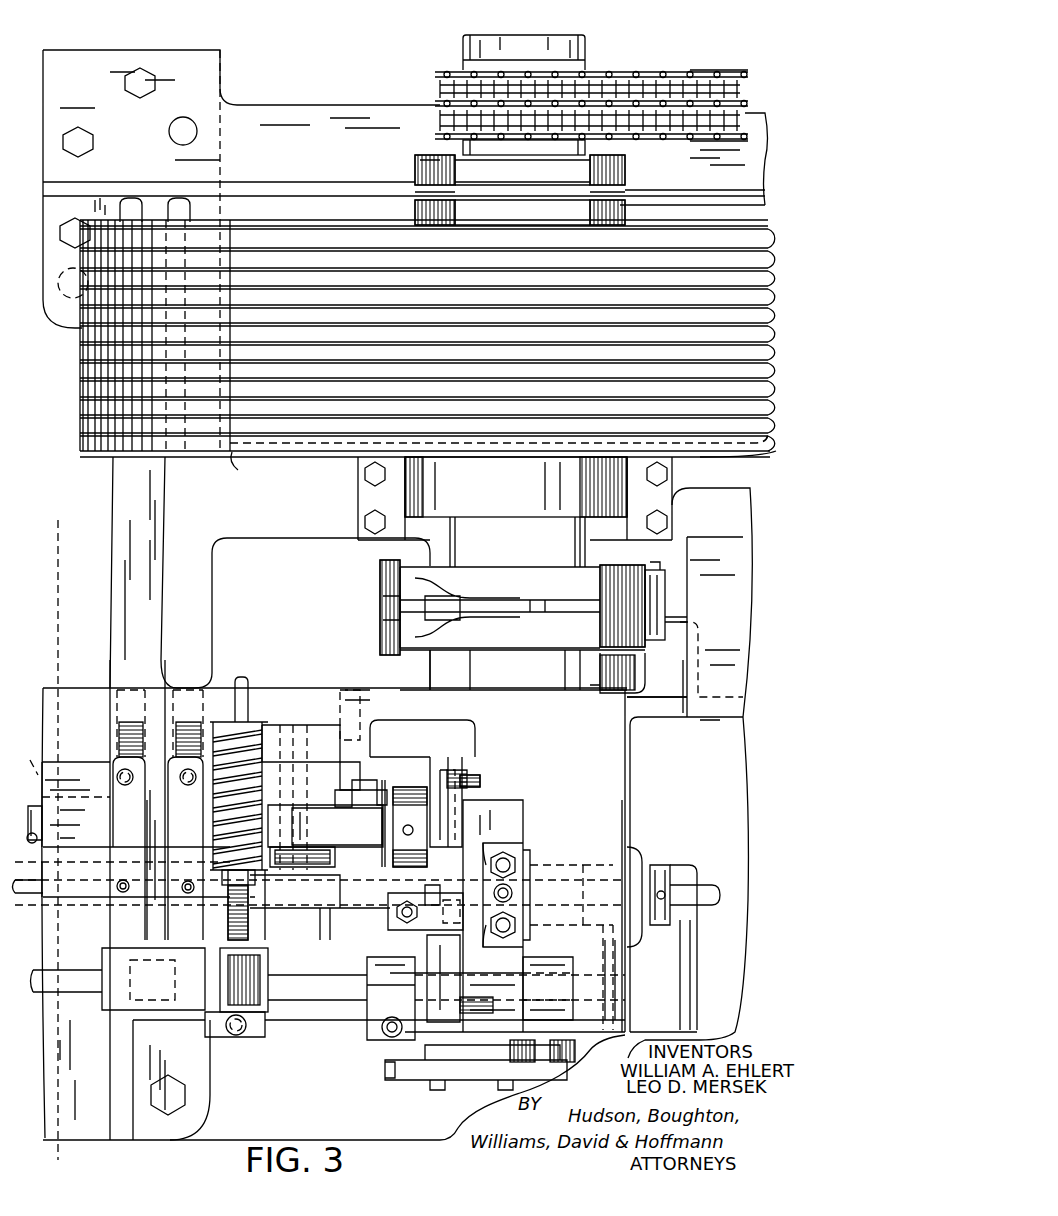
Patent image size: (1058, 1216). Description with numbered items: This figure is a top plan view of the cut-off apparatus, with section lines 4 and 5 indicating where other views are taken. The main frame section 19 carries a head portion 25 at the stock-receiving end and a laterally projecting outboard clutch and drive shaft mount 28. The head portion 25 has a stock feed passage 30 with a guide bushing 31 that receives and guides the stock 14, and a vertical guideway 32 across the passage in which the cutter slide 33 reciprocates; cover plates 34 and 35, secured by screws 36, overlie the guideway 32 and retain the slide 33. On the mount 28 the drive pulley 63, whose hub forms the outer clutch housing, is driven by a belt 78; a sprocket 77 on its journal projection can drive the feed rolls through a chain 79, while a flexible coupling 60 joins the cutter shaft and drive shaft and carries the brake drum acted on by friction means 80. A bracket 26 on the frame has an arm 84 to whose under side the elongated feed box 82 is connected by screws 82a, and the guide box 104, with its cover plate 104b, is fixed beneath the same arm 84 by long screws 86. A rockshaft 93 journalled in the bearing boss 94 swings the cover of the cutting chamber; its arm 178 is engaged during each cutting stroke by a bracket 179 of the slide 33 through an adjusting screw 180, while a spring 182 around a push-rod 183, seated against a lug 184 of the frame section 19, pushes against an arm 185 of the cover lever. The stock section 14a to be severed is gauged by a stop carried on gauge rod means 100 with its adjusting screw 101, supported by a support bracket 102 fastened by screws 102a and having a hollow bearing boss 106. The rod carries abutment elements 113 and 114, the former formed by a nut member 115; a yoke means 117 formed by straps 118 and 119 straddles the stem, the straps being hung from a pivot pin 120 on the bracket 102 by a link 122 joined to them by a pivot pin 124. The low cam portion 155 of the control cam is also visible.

The section line 4- 4 is at (58, 518).
The section line 5-5 / sprocket hub 5 is at (505, 18).
The stock 14 is at (703, 912).
The stock section 14a is at (27, 898).
The main section 19 is at (285, 1022).
The head portion 25 is at (610, 970).
The bracket 26 is at (110, 740).
The outboard clutch and drive shaft mount 28 is at (318, 118).
The stock feed passage 30 is at (566, 876).
The guide bushing 31 is at (660, 867).
The guideway 32 is at (518, 822).
The cutter slide 33 is at (510, 955).
The cover plate 34 is at (436, 788).
The cover plate 35 is at (508, 945).
The screws 36 is at (455, 960).
The flexible coupling 60 is at (578, 686).
The drive pulley 63 is at (427, 355).
The sprocket 77 is at (612, 88).
The belt 78 is at (768, 462).
The chain 79 is at (702, 80).
The friction means 80 is at (523, 588).
The feed box 82 is at (283, 915).
The screws 82a is at (123, 893).
The arm 84 is at (155, 835).
The screws 86 is at (118, 782).
The rockshaft 93 is at (60, 992).
The bearing boss 94 is at (110, 1012).
The gauge rod means 100 is at (25, 817).
The adjusting screw 101 is at (33, 846).
The support bracket 102 is at (377, 738).
The screws 102a is at (375, 700).
The guide box 104 is at (68, 772).
The cover plate 104b is at (25, 756).
The bearing boss 106 is at (300, 872).
The abutment element 113 is at (455, 800).
The abutment element 114 is at (342, 790).
The nut member 115 is at (422, 815).
The yoke means 117 is at (322, 915).
The strap 118 is at (345, 862).
The strap 119 is at (365, 777).
The pivot pin 120 is at (312, 848).
The link 122 is at (330, 790).
The pivot pin 124 is at (385, 792).
The low cam portion 155 is at (385, 1082).
The arm 178 is at (405, 945).
The bracket 179 is at (430, 900).
The adjusting screw 180 is at (390, 918).
The spring 182 is at (213, 815).
The push-rod 183 is at (228, 926).
The lug 184 is at (262, 702).
The arm 185 is at (268, 992).